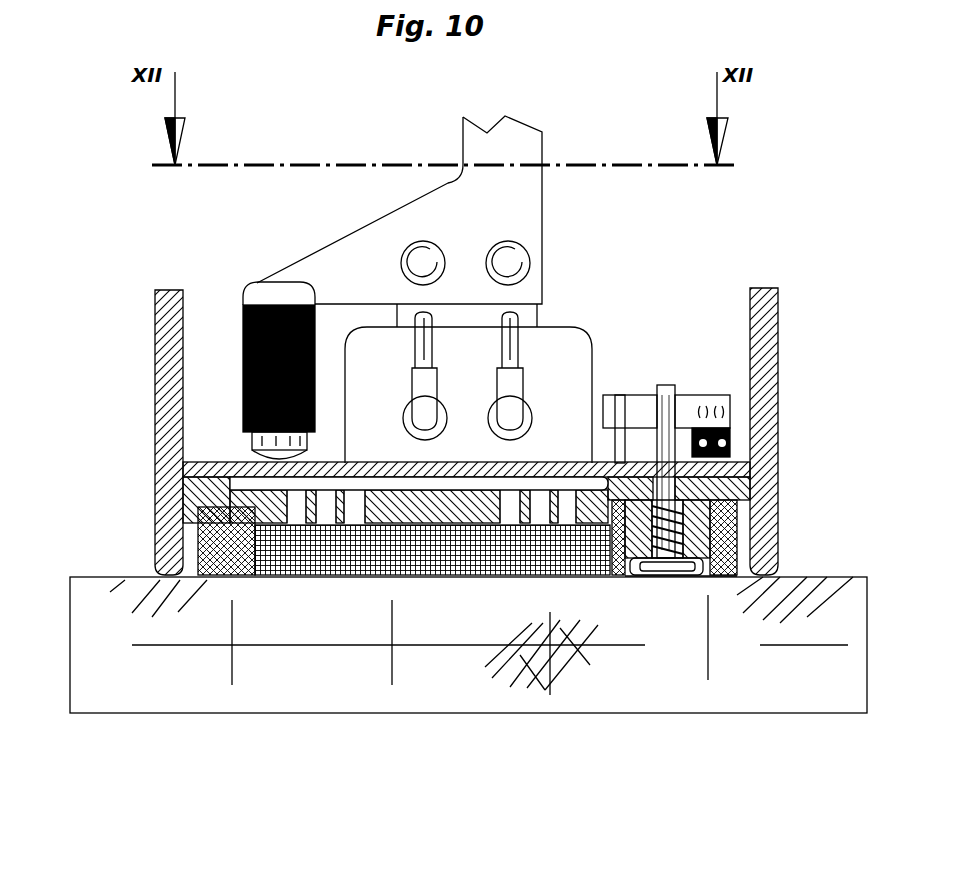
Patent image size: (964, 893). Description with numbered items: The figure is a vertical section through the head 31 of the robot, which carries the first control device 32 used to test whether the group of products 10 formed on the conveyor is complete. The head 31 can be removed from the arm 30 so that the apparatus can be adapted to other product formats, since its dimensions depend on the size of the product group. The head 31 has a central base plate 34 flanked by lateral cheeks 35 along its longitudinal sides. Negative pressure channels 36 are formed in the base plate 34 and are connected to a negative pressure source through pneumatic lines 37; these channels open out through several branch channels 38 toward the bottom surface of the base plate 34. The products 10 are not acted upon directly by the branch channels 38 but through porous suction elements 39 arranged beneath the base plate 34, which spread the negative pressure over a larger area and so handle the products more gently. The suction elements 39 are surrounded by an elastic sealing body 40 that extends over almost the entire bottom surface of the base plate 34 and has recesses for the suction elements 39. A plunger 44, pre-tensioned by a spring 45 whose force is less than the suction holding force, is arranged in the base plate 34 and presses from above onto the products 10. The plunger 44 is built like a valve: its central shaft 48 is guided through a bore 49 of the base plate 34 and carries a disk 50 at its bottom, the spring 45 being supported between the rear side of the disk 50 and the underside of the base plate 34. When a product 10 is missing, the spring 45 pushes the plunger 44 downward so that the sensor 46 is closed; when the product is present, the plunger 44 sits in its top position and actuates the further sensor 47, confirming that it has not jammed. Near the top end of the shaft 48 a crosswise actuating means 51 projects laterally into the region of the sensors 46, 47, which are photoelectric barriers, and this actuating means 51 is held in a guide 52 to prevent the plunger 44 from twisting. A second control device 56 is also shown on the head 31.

The product 10 is at (813, 670).
The arm 30 is at (453, 222).
The head 31 is at (474, 401).
The control device 32 is at (600, 328).
The base plate 34 is at (522, 612).
The cheek 35 is at (160, 352).
The negative pressure channel 36 is at (450, 482).
The pneumatic line 37 is at (505, 338).
The branch channel 38 is at (296, 510).
The porous suction element 39 is at (385, 577).
The elastic sealing body 40 is at (200, 548).
The plunger 44 is at (662, 570).
The spring 45 is at (695, 522).
The sensor 46 is at (733, 437).
The further sensor 47 is at (733, 397).
The central shaft 48 is at (663, 397).
The bore 49 is at (638, 476).
The disk 50 is at (687, 577).
The crosswise actuating means 51 is at (633, 410).
The guide 52 is at (618, 412).
The second control device 56 is at (243, 360).